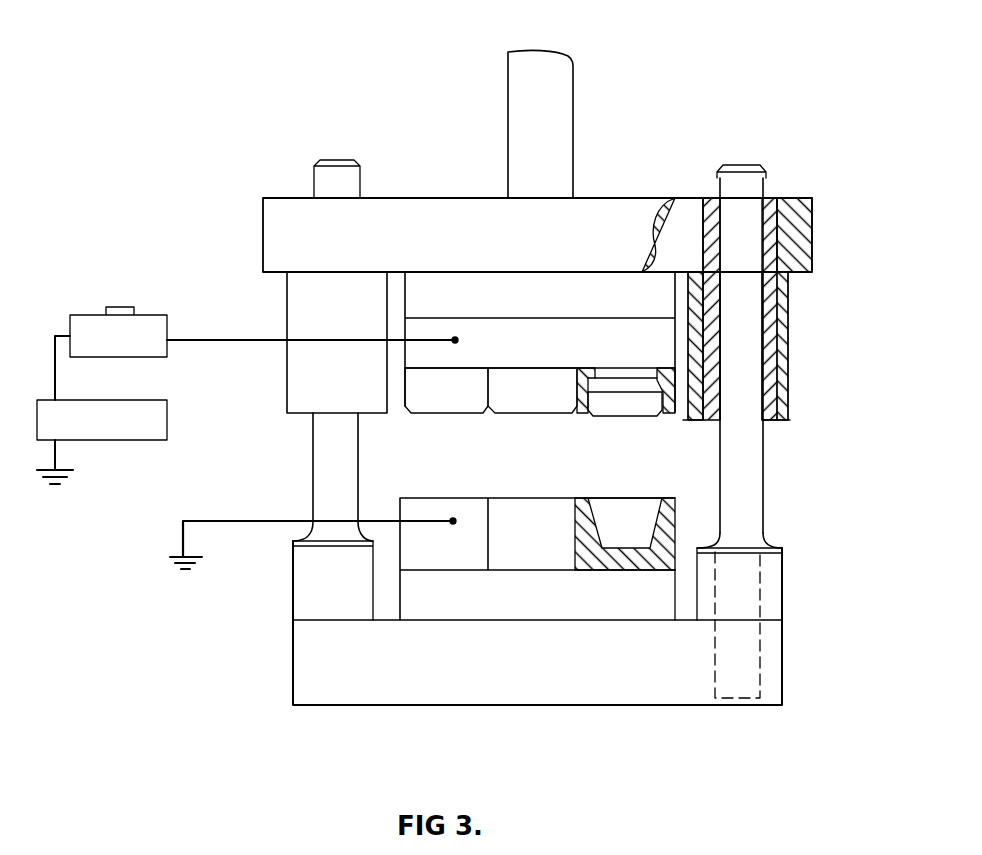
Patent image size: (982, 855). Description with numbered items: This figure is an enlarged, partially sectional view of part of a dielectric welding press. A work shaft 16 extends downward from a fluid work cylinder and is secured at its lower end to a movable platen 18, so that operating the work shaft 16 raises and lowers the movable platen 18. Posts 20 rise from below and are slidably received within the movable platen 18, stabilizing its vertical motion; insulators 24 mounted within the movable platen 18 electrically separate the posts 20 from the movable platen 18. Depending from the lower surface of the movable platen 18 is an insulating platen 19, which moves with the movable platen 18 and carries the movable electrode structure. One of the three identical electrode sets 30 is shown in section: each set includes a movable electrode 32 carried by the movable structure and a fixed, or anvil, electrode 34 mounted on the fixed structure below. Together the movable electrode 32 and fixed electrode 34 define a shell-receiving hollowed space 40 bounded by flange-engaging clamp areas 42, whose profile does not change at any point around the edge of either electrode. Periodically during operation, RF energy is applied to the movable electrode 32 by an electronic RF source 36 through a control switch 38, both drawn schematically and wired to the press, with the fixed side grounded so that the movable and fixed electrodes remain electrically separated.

The work shaft 16 is at (560, 85).
The movable platen 18 is at (587, 228).
The insulating platen 19 is at (428, 293).
The insulators 24 is at (769, 212).
The posts 20 is at (328, 461).
The electrode sets 30 is at (413, 399).
The movable electrode 32 is at (452, 385).
The fixed electrode 34 is at (462, 515).
The shell-receiving hollowed space 40 is at (598, 409).
The flange-engaging clamp areas 42 is at (672, 410).
The control switch 38 is at (92, 325).
The electronic RF source 36 is at (140, 428).